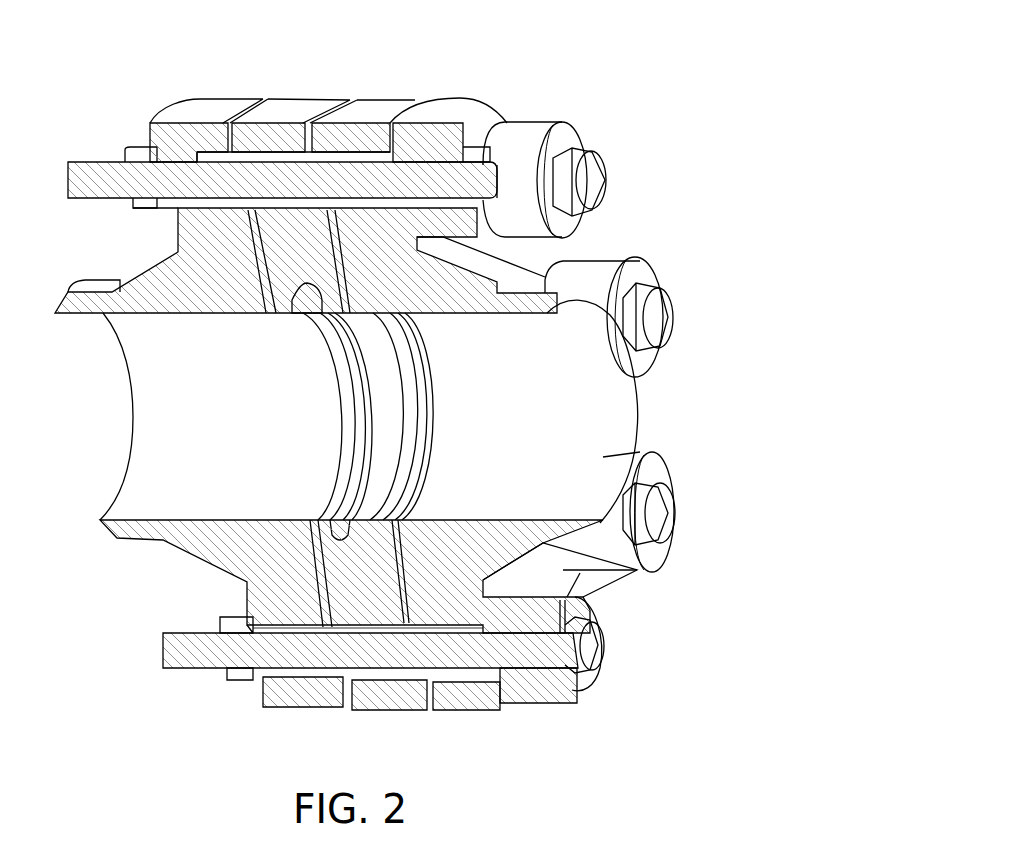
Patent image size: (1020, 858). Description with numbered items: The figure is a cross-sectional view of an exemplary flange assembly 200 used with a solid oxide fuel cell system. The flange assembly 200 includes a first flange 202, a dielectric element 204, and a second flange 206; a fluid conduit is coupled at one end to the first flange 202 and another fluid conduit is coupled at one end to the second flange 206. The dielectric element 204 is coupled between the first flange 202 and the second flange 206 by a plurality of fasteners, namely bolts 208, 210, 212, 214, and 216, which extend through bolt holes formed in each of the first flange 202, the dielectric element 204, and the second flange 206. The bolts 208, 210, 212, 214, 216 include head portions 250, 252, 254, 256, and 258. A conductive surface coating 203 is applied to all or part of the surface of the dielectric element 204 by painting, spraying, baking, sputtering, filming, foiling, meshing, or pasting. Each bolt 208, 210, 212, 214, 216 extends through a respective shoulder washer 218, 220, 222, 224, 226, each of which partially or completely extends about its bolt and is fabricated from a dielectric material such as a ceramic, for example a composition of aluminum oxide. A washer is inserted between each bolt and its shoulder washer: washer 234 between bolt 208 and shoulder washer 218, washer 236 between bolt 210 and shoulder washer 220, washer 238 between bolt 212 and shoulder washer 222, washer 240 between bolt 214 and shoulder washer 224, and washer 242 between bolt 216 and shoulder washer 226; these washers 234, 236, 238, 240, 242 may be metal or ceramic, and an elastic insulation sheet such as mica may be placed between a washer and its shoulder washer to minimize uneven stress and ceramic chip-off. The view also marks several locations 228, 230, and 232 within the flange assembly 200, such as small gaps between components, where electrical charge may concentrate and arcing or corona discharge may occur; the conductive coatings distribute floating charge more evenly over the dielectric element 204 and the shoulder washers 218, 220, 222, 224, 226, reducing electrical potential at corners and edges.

The flange assembly 200 is at (720, 68).
The first flange 202 is at (163, 122).
The conductive surface coating 203 is at (427, 712).
The dielectric element 204 is at (305, 108).
The second flange 206 is at (400, 98).
The bolt 208 is at (522, 160).
The bolt 210 is at (592, 178).
The bolt 212 is at (658, 322).
The bolt 214 is at (660, 512).
The bolt 216 is at (580, 645).
The shoulder washer 218 is at (463, 123).
The shoulder washer 220 is at (545, 125).
The shoulder washer 222 is at (638, 252).
The shoulder washer 224 is at (647, 470).
The shoulder washer 226 is at (580, 600).
The location 228 is at (310, 541).
The location 230 is at (325, 615).
The location 232 is at (460, 632).
The washer 234 is at (478, 123).
The washer 236 is at (570, 137).
The washer 238 is at (640, 275).
The washer 240 is at (645, 478).
The washer 242 is at (575, 608).
The head portion 250 is at (500, 125).
The head portion 252 is at (578, 212).
The head portion 254 is at (645, 350).
The head portion 256 is at (645, 547).
The head portion 258 is at (577, 686).